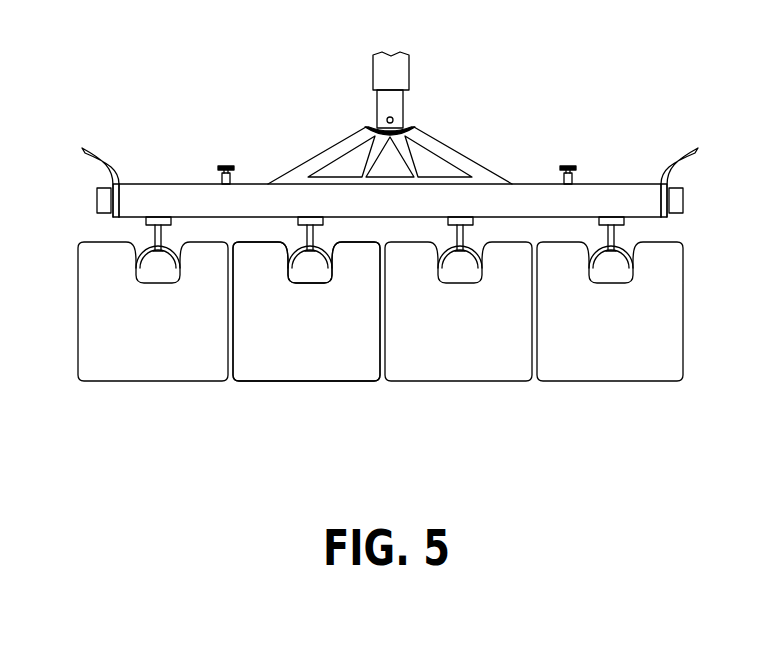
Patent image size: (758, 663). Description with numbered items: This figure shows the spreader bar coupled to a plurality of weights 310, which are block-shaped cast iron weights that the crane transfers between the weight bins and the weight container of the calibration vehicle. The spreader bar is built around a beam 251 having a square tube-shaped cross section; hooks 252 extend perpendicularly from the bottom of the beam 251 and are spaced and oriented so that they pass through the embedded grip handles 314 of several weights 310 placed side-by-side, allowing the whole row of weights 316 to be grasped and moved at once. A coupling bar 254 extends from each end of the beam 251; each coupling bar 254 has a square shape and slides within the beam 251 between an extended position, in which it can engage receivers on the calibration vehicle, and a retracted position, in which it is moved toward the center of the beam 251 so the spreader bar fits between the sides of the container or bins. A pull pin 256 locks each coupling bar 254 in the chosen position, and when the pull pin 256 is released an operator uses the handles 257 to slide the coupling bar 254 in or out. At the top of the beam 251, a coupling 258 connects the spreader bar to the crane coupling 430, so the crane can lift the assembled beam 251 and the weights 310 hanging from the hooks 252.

The beam 251 is at (410, 210).
The hooks 252 is at (305, 240).
The coupling bar 254 is at (97, 195).
The pull pin 256 is at (222, 167).
The handles 257 is at (100, 152).
The coupling 258 is at (375, 122).
The weights 310 is at (603, 358).
The grip handle 314 is at (137, 243).
The row of weights 316 is at (357, 324).
The crane coupling 430 is at (393, 99).